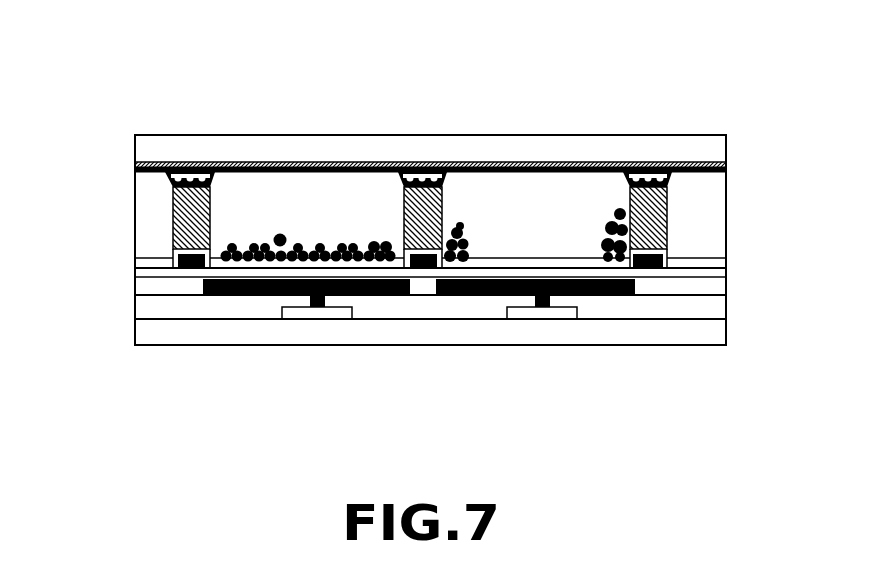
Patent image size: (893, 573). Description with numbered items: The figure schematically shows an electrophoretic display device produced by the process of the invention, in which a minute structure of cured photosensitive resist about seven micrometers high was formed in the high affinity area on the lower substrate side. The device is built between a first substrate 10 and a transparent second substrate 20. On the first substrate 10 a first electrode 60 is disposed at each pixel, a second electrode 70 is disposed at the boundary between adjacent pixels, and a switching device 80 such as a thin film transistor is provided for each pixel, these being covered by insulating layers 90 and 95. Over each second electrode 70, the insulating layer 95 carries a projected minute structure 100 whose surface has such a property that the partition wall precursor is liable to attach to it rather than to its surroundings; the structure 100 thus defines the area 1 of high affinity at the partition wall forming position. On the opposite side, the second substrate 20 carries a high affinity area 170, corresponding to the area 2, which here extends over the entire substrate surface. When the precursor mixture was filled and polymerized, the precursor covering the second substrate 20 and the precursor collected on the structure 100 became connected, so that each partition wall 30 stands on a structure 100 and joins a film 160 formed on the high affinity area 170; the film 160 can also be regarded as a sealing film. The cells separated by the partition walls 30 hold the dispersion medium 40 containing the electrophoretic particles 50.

The area 1 is at (669, 182).
The area 2 is at (726, 179).
The first substrate 10 is at (715, 333).
The transparent second substrate 20 is at (682, 142).
The partition wall 30 is at (668, 180).
The dispersion medium 40 is at (227, 212).
The electrophoretic particles 50 is at (276, 238).
The first electrode 60 is at (386, 296).
The second electrode 70 is at (648, 268).
The switching device 80 is at (540, 313).
The insulating layer 90 is at (145, 283).
The insulating layer 95 is at (137, 264).
The projected minute structure 100 is at (653, 230).
The film 160 is at (540, 163).
The high affinity area 170 is at (727, 163).